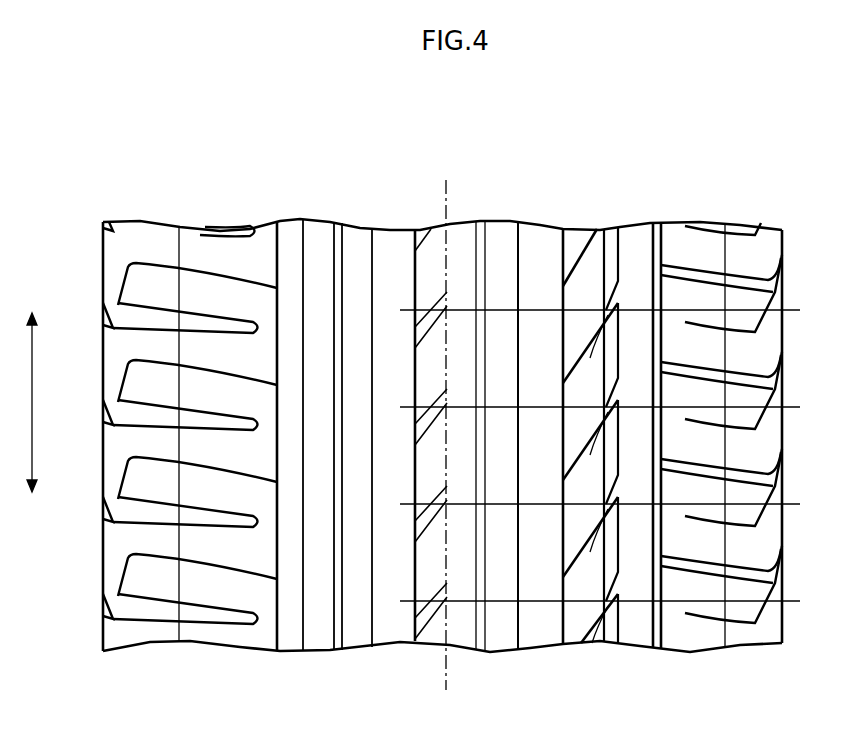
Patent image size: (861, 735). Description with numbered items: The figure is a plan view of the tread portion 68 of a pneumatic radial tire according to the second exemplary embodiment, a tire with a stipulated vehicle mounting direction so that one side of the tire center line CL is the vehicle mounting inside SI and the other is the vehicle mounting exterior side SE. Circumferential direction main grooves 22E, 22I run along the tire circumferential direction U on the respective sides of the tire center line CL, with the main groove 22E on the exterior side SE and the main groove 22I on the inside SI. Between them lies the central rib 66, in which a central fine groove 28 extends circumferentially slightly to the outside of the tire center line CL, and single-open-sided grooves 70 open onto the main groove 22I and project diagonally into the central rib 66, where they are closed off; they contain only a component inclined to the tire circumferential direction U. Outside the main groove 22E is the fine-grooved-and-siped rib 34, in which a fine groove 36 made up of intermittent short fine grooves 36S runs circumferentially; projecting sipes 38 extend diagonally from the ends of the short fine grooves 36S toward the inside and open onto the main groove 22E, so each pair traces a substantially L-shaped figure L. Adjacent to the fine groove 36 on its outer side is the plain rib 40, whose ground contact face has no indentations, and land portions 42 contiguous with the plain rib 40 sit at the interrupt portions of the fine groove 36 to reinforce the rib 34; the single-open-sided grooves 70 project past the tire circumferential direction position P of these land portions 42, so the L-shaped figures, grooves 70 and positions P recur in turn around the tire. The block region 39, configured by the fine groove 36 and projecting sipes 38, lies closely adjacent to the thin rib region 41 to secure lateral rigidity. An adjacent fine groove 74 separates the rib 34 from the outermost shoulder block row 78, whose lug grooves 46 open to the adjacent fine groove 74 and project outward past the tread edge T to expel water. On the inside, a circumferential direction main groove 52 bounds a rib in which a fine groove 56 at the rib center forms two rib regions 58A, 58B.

The tread portion 68 is at (573, 116).
The rib region 58A is at (320, 233).
The fine groove 56 is at (340, 232).
The rib region 58B is at (357, 236).
The circumferential direction main groove 52 is at (290, 643).
The circumferential direction main groove 22I is at (388, 645).
The tire center line CL is at (448, 194).
The central rib 66 is at (518, 661).
The single-open-sided grooves 70 is at (423, 328).
The central fine groove 28 is at (492, 229).
The circumferential direction main groove 22E is at (535, 645).
The tire circumferential direction position P is at (610, 455).
The fine-grooved-and-siped rib 34 is at (648, 657).
The block region 39 is at (603, 216).
The fine groove 36 is at (610, 226).
The short fine grooves 36S is at (620, 259).
The projecting sipes 38 is at (580, 259).
The land portions 42 is at (604, 342).
The plain rib 40 is at (652, 216).
The thin rib region 41 is at (649, 212).
The adjacent fine groove 74 is at (660, 225).
The block row (shoulder block row) 78 is at (660, 657).
The lug grooves 46 is at (690, 371).
The tread edge T is at (178, 245).
The substantially L-shaped figure L is at (584, 397).
The tire circumferential direction U is at (40, 397).
The vehicle mounting inside SI is at (55, 269).
The vehicle mounting exterior side SE is at (826, 269).